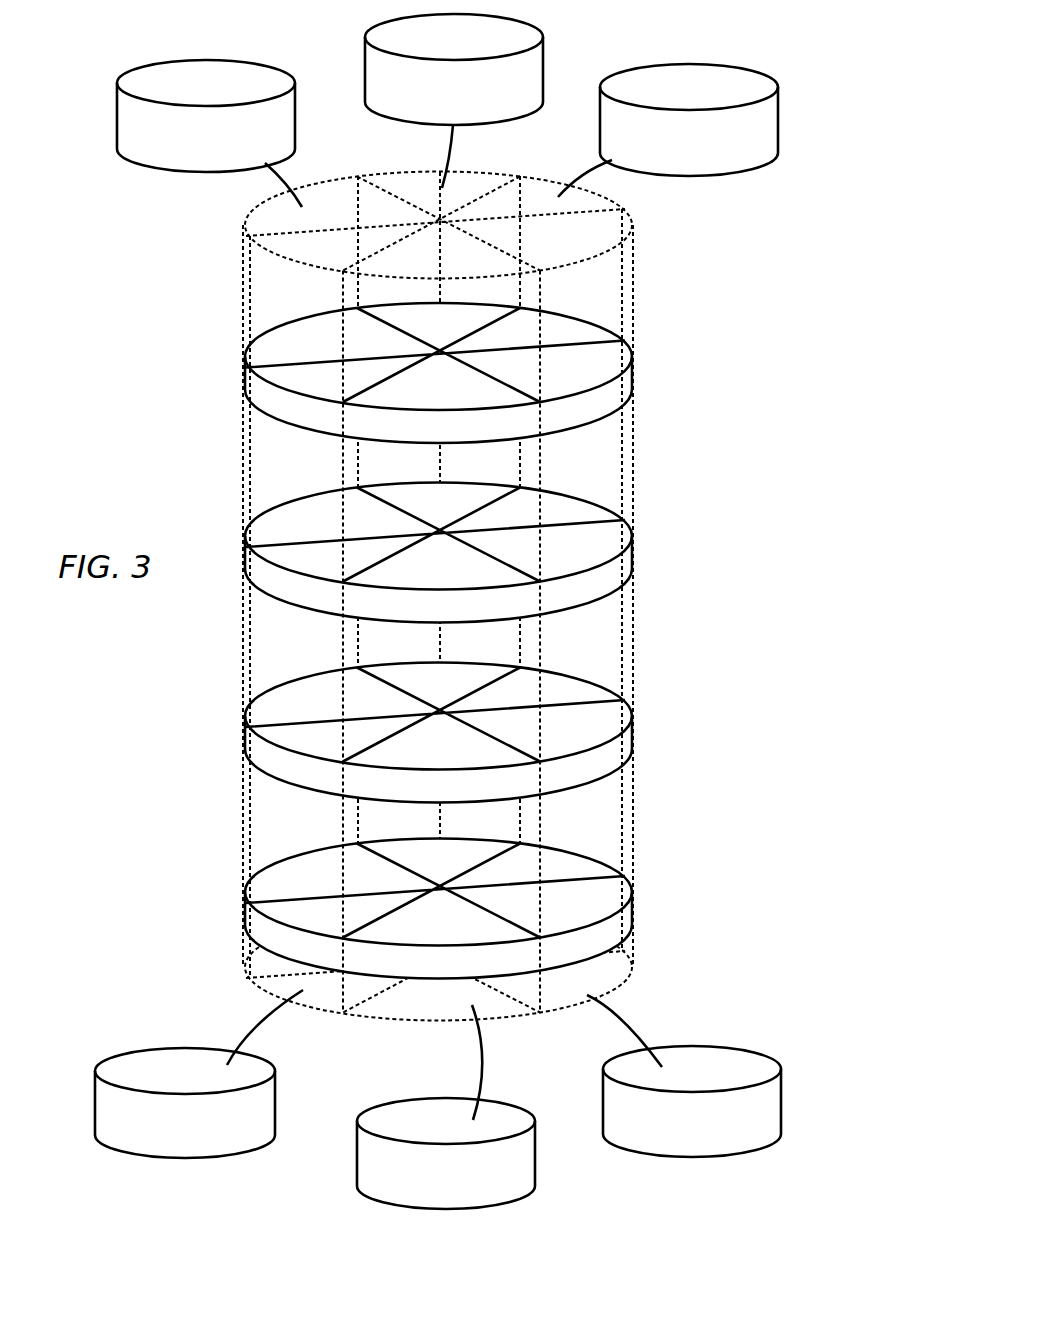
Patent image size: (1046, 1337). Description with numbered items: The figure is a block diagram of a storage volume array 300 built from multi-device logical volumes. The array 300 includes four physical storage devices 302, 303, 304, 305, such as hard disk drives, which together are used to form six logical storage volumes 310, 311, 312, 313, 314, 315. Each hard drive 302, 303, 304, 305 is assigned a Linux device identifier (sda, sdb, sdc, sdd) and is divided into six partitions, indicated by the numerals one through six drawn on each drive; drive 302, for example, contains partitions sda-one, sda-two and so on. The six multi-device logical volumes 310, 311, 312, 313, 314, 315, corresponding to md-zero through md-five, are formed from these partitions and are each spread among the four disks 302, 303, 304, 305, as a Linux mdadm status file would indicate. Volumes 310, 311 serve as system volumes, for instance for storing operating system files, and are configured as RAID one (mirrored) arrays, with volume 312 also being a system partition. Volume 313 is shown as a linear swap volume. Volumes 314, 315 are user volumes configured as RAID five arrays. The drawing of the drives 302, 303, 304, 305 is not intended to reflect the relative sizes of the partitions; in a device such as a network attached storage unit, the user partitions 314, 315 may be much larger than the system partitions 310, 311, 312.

The storage volume array 300 is at (370, 596).
The physical storage device 302 is at (615, 395).
The physical storage device 303 is at (622, 567).
The physical storage device 304 is at (623, 747).
The physical storage device 305 is at (623, 925).
The logical storage volume 310 is at (377, 35).
The logical storage volume 311 is at (653, 77).
The logical storage volume 312 is at (753, 1070).
The logical storage volume 313 is at (500, 1117).
The user volume 314 is at (255, 1075).
The user volume 315 is at (140, 80).